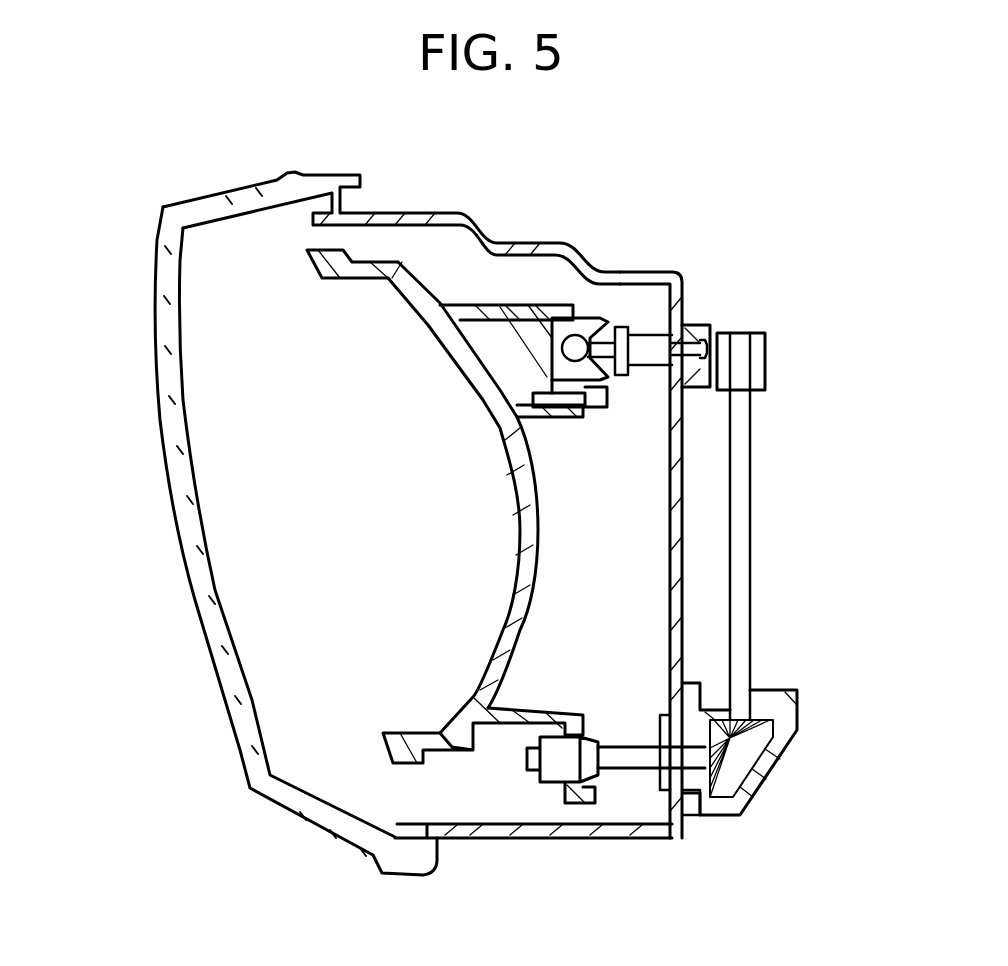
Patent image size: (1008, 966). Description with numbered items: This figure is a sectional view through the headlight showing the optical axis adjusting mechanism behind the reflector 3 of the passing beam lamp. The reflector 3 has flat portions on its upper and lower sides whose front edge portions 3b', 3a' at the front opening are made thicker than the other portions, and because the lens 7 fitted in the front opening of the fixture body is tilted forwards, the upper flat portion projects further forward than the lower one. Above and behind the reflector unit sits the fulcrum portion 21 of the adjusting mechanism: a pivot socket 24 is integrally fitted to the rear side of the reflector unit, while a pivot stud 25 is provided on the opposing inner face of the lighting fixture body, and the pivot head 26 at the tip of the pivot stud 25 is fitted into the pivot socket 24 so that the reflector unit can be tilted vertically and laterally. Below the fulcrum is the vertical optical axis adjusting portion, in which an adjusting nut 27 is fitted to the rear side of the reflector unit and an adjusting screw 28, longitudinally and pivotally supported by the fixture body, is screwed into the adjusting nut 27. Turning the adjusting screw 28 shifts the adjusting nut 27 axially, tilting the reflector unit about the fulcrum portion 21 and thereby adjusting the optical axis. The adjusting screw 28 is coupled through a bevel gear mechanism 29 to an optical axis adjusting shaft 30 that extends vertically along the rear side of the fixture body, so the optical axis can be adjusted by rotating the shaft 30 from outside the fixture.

The reflector 3 is at (530, 533).
The front edge portion of lower flat portion 3a' is at (431, 710).
The front edge portion of upper flat portion 3b' is at (340, 309).
The lens 7 is at (190, 528).
The fulcrum portion 21 is at (640, 324).
The pivot socket 24 is at (580, 320).
The pivot stud 25 is at (647, 357).
The pivot head 26 is at (607, 398).
The adjusting nut 27 is at (553, 768).
The adjusting screw 28 is at (637, 760).
The bevel gear mechanism 29 is at (780, 735).
The optical axis adjusting shaft 30 is at (747, 575).